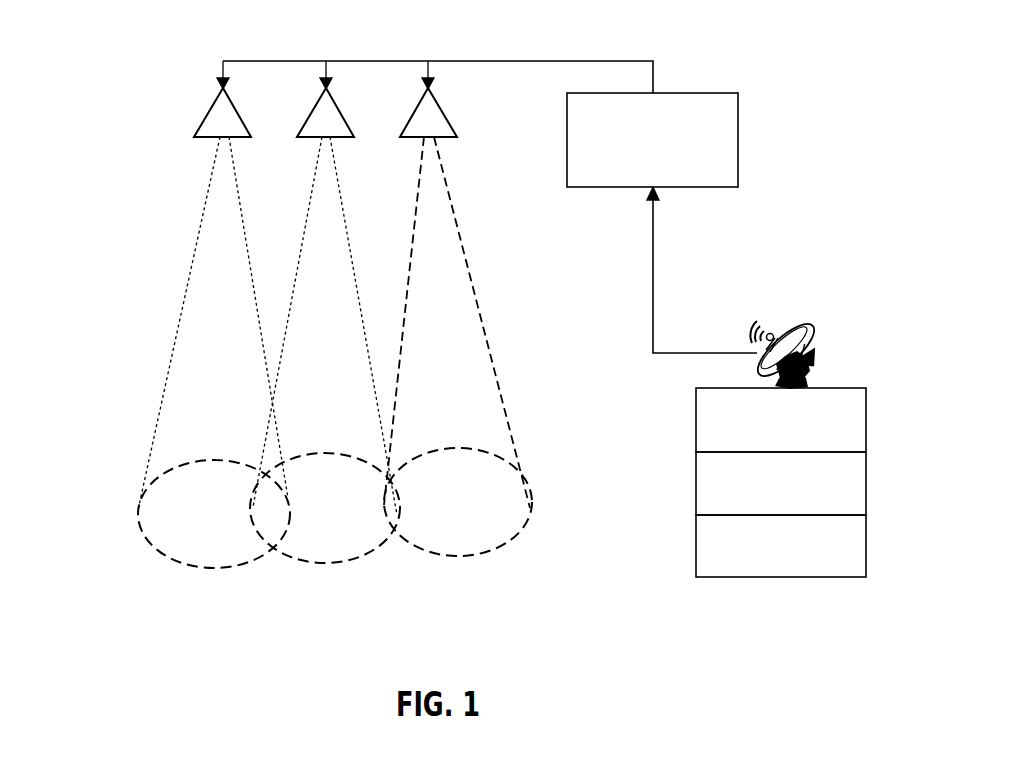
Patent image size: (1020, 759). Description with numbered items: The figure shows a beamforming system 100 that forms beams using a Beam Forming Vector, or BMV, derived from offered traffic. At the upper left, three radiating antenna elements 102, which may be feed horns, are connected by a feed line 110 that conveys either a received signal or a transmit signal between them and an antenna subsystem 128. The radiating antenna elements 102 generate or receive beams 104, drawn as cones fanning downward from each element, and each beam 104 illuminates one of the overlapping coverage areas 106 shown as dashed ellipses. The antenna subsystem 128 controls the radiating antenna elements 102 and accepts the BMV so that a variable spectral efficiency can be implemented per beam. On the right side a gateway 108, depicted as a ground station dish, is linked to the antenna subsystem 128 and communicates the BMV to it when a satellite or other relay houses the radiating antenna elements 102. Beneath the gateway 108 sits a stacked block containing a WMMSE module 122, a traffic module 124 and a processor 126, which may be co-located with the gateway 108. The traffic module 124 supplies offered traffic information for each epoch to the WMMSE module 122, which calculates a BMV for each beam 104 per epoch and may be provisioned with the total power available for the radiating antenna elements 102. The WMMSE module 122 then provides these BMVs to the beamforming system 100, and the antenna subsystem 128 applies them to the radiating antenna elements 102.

The beamforming system 100 is at (767, 233).
The radiating antenna elements 102 is at (203, 112).
The beams 104 is at (187, 290).
The coverage areas 106 is at (138, 510).
The gateway 108 is at (783, 321).
The feed line 110 is at (625, 61).
The WMMSE module 122 is at (781, 420).
The traffic module 124 is at (781, 483).
The processor 126 is at (781, 546).
The antenna subsystem 128 is at (652, 140).